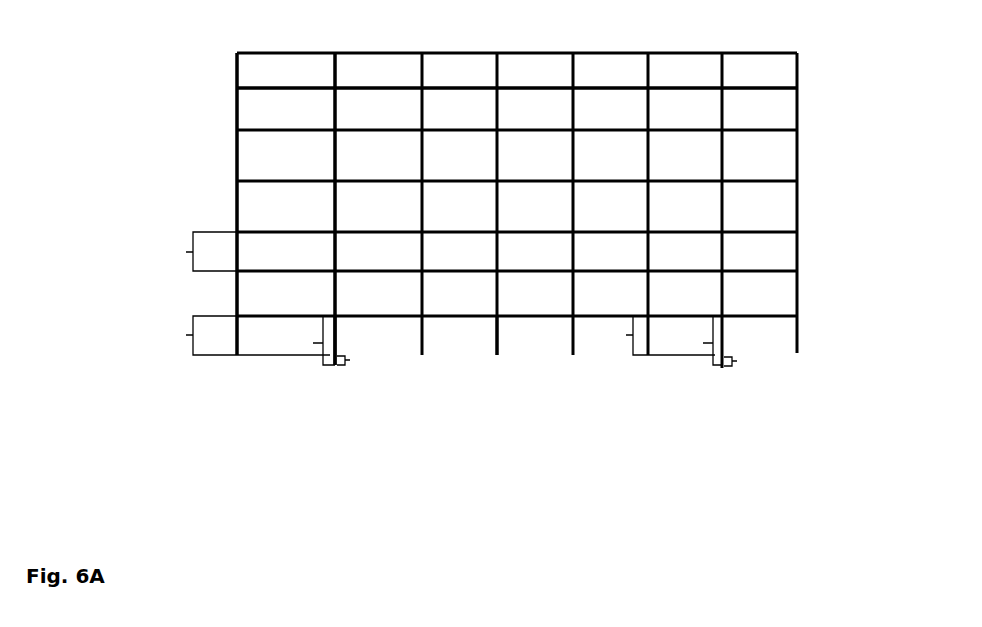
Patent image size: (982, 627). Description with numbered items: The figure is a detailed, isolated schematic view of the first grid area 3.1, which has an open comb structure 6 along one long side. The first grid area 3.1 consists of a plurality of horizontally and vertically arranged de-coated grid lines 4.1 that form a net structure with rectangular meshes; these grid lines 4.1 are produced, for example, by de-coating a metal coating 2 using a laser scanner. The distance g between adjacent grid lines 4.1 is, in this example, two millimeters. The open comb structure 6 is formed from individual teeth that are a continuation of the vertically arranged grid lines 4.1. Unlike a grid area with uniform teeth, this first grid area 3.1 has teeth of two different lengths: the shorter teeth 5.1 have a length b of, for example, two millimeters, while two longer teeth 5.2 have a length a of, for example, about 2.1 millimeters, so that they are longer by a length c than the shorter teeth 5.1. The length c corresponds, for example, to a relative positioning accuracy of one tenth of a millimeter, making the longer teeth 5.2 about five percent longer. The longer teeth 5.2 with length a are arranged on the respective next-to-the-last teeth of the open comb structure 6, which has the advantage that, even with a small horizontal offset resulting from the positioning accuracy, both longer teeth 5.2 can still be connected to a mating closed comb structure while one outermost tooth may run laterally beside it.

The metal coating 2 is at (765, 290).
The first grid area 3.1 is at (222, 145).
The grid lines 4.1 is at (330, 72).
The shorter teeth 5.1 is at (237, 356).
The longer teeth 5.2 is at (336, 368).
The open comb structure 6 is at (490, 376).
The length of the longer teeth a is at (507, 340).
The length of the shorter teeth b is at (443, 335).
The length difference c is at (544, 364).
The distance between the grid lines g is at (201, 251).